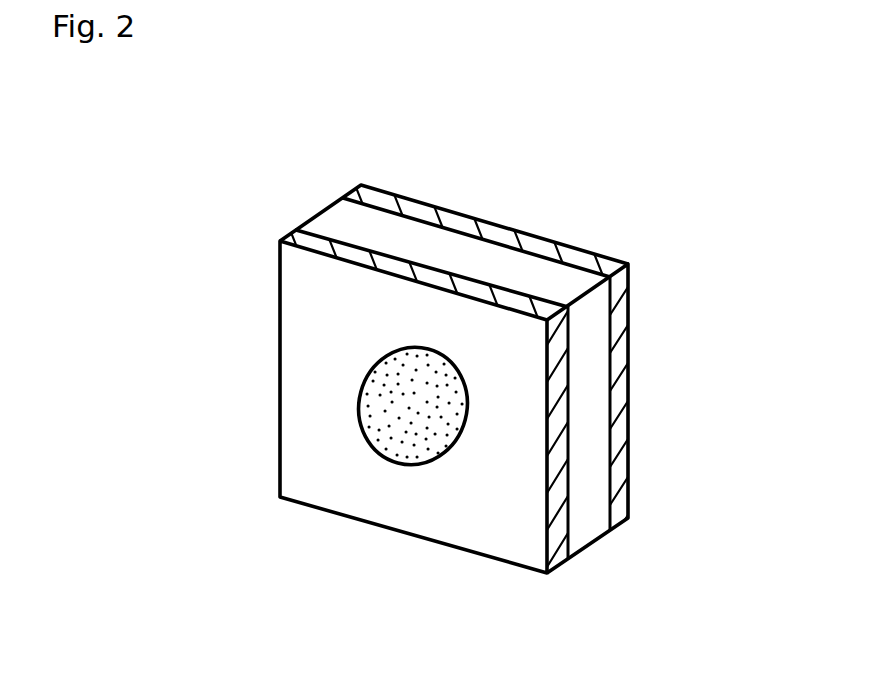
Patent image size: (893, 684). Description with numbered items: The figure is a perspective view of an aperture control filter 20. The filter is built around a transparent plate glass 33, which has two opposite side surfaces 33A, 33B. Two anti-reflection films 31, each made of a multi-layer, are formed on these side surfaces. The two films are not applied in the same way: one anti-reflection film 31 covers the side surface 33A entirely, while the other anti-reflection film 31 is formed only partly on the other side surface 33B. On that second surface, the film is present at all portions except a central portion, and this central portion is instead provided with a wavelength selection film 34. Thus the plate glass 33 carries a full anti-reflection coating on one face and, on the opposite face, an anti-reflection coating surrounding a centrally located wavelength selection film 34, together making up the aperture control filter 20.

The aperture control filter 20 is at (447, 335).
The anti-reflection film 31 is at (407, 405).
The transparent plate glass 33 is at (588, 530).
The side surface 33A is at (359, 186).
The side surface 33B is at (294, 230).
The wavelength selection film 34 is at (305, 319).